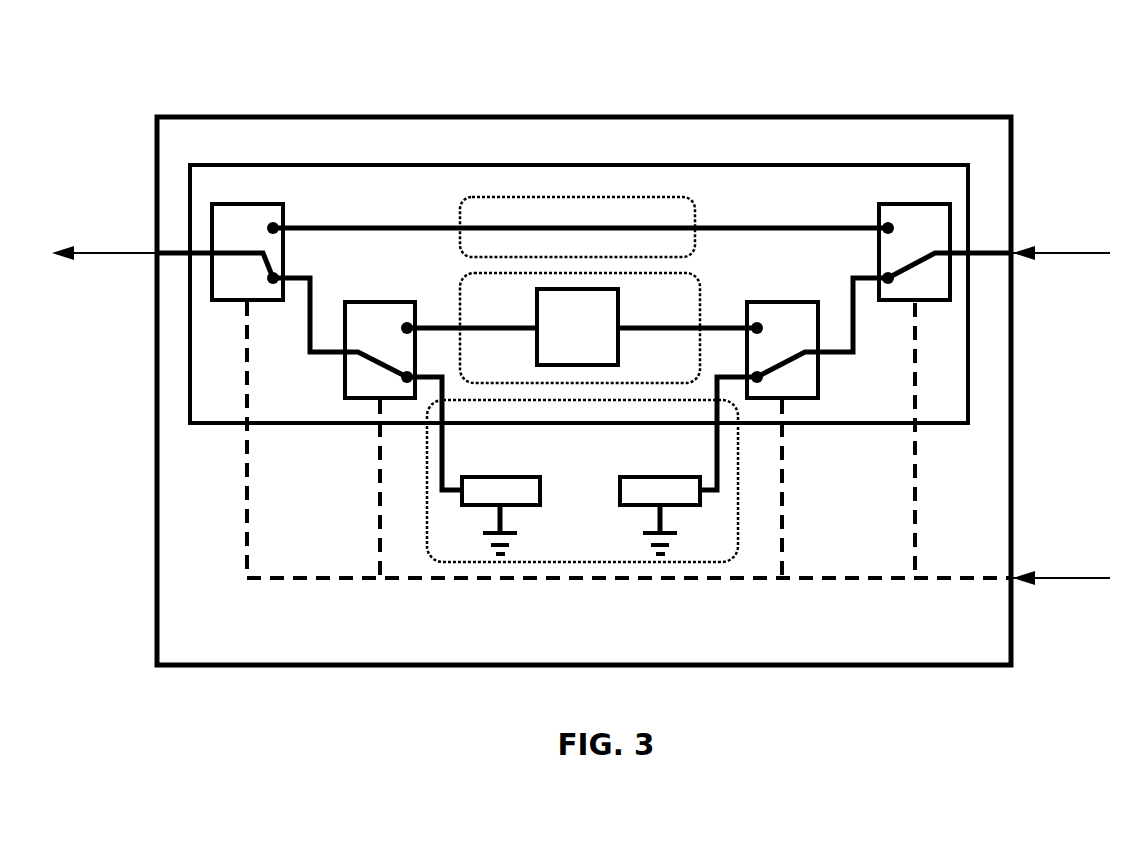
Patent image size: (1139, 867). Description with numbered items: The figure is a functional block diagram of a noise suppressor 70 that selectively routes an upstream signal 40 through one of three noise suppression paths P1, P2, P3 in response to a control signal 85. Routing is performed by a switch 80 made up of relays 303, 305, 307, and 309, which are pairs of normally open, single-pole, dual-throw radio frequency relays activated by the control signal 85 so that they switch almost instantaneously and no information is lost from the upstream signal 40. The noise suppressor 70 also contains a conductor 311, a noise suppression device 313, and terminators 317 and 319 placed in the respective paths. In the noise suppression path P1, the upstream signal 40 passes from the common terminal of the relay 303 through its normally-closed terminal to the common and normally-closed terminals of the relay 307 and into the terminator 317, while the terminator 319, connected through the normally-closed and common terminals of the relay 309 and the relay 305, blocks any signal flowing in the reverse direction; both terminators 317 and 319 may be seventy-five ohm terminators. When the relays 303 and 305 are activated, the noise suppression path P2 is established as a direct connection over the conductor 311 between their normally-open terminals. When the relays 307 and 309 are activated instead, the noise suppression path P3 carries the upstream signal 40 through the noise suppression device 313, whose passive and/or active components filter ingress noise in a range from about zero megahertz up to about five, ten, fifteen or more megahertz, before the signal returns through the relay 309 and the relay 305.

The noise suppressor 70 is at (685, 657).
The switch 80 is at (970, 237).
The upstream signal 40 is at (1082, 346).
The control signal 85 is at (1051, 681).
The relay 303 is at (953, 210).
The relay 305 is at (212, 232).
The relay 307 is at (760, 298).
The relay 309 is at (388, 300).
The conductor 311 is at (557, 225).
The noise suppression device 313 is at (540, 287).
The terminator 317 is at (690, 508).
The terminator 319 is at (477, 507).
The noise suppression path P1 is at (427, 503).
The noise suppression path P2 is at (693, 207).
The noise suppression path P3 is at (698, 295).